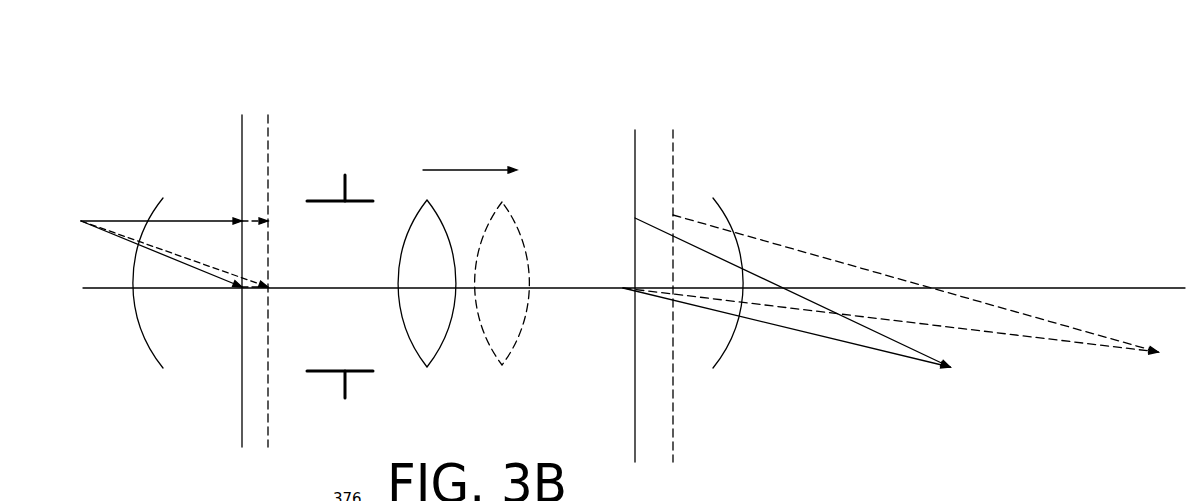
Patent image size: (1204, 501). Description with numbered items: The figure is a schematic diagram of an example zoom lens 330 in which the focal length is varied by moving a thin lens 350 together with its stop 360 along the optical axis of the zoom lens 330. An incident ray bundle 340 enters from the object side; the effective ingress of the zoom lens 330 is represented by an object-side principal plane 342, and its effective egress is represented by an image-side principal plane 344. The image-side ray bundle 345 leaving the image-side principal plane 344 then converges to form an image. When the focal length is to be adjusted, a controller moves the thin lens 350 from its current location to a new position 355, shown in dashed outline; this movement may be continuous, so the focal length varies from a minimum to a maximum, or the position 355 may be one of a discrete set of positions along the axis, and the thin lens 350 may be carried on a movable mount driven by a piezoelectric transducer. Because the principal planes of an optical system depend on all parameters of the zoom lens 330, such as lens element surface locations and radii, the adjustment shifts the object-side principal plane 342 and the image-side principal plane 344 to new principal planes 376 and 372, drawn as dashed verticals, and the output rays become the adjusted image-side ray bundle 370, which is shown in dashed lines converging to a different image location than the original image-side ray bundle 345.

The zoom lens 330 is at (68, 66).
The ray bundle 340 is at (112, 220).
The object-side principal plane 342 is at (242, 140).
The new object-side principal plane 376 is at (268, 130).
The stop 360 is at (318, 200).
The thin lens 350 is at (412, 230).
The position of the thin lens 355 is at (478, 230).
The image-side principal plane 344 is at (635, 167).
The new image-side principal plane 372 is at (673, 167).
The image-side ray bundle 345 is at (825, 336).
The adjusted image-side ray bundle 370 is at (1047, 337).